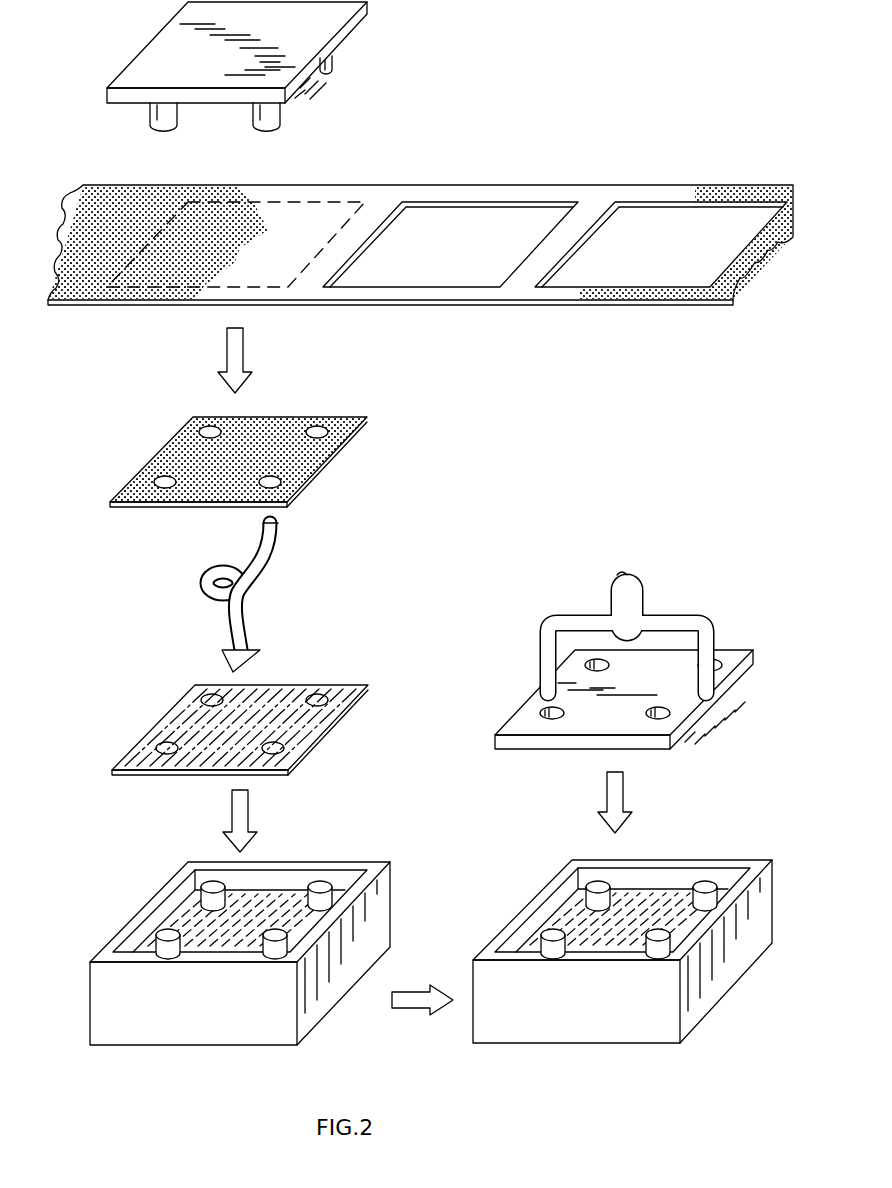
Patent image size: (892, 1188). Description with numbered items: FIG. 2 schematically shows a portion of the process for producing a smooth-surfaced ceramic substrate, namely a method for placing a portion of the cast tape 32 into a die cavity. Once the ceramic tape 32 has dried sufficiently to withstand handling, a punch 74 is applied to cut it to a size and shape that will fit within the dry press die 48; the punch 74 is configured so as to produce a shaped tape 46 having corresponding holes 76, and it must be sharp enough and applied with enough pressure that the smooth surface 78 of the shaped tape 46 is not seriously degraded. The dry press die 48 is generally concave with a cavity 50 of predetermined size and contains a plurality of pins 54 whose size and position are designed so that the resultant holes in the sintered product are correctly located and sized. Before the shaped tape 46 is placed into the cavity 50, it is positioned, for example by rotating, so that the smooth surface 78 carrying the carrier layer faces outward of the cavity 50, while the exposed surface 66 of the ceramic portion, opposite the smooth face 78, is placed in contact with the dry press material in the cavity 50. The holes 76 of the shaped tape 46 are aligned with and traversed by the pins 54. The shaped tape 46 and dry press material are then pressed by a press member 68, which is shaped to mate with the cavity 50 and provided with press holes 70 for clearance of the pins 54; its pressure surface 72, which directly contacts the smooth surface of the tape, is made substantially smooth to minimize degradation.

The punch 74 is at (307, 37).
The cast tape 32 is at (220, 185).
The exposed surface 66 is at (272, 428).
The holes 76 is at (165, 480).
The shaped tape 46 is at (397, 396).
The smooth surface 78 is at (290, 700).
The press member 68 is at (633, 593).
The press holes 70 is at (713, 650).
The pressure surface 72 is at (572, 752).
The cavity 50 is at (285, 878).
The pins 54 is at (320, 887).
The dry press die 48 is at (269, 939).